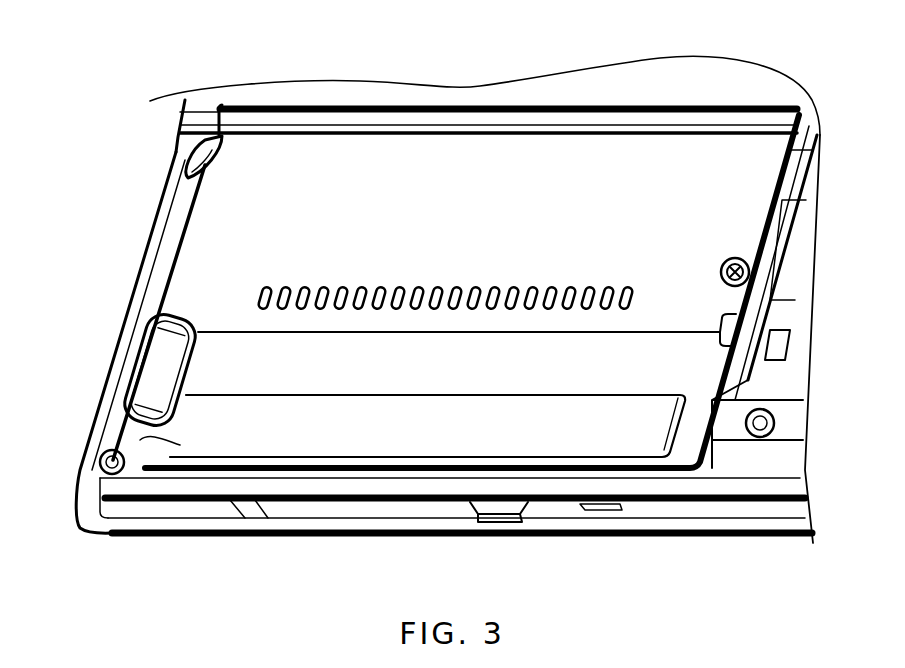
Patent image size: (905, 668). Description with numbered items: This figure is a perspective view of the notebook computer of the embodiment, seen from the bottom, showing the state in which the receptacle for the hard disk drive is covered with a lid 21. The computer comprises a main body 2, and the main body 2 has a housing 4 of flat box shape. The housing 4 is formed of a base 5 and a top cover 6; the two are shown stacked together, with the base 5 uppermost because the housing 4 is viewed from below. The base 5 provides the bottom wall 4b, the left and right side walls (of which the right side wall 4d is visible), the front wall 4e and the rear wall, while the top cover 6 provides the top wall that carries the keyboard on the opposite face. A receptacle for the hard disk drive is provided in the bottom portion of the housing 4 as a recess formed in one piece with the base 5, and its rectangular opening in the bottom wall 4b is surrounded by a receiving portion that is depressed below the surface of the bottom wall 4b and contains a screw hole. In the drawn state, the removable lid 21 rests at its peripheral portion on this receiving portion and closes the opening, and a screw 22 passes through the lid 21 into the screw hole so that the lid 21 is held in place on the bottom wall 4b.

The main body 2 is at (133, 283).
The housing 4 is at (254, 598).
The bottom wall 4b is at (648, 85).
The right side wall 4d is at (103, 383).
The front wall 4e is at (572, 513).
The base 5 is at (180, 508).
The top cover 6 is at (242, 528).
The lid 21 is at (395, 424).
The screw 22 is at (738, 258).